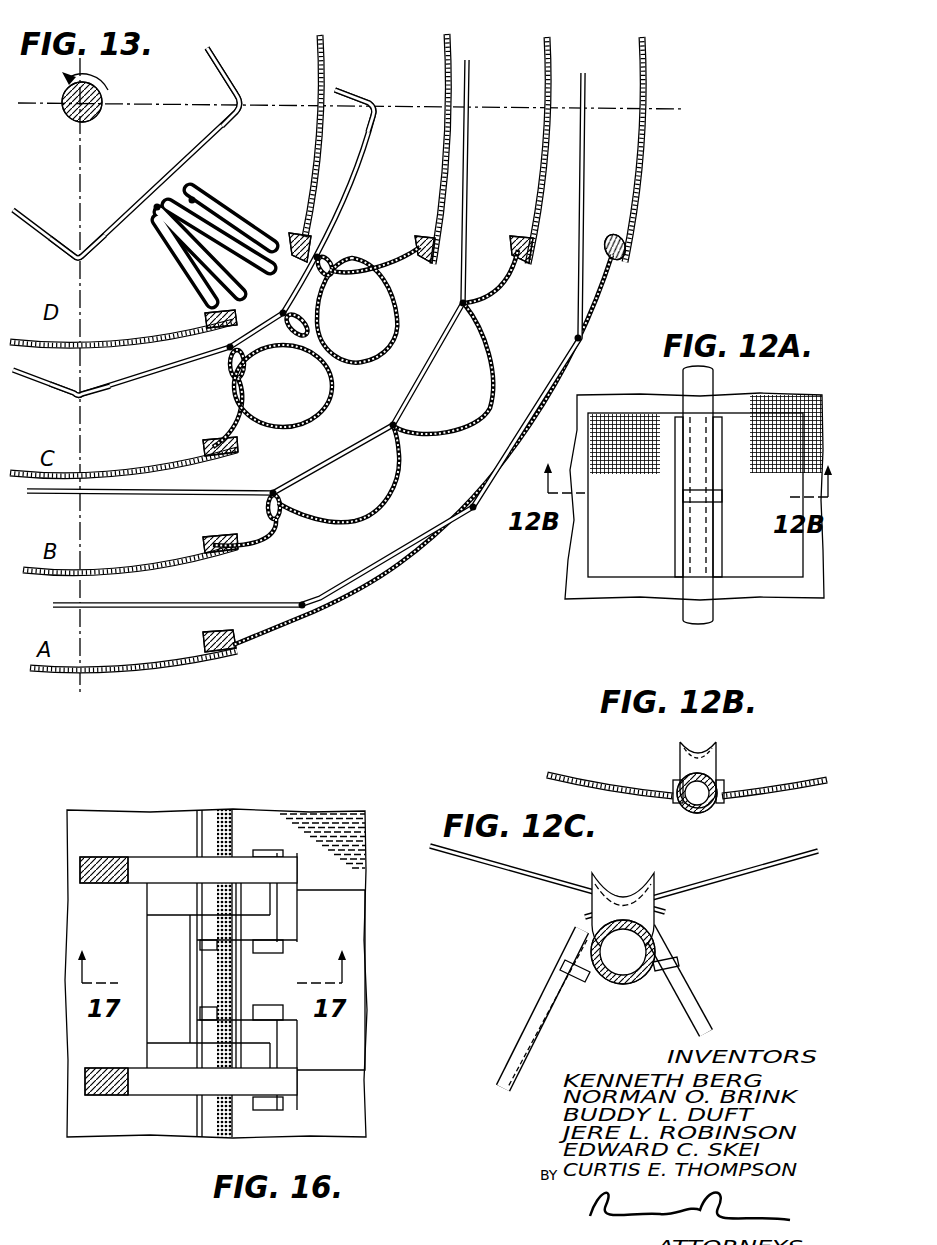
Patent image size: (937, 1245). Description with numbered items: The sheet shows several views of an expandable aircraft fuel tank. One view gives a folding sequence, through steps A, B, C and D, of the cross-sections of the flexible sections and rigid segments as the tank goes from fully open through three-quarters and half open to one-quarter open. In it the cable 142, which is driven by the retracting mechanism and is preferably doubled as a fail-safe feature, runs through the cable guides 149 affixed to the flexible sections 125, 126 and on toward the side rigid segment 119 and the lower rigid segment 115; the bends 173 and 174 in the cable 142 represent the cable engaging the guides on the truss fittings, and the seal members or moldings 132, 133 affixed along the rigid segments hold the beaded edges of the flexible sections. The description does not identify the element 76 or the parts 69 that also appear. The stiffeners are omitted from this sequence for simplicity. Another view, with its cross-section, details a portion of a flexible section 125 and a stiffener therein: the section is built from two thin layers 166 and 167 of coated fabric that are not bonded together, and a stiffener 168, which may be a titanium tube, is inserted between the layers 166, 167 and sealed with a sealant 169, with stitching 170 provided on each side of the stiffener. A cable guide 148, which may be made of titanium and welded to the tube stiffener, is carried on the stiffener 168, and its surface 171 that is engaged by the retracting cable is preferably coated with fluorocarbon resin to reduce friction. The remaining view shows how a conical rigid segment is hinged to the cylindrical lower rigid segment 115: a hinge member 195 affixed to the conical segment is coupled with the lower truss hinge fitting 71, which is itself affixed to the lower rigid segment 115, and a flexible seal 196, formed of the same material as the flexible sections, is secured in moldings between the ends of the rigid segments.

In FIG. 13, the pivot shaft 76 is at (68, 122).
In FIG. 13, the bend in cable 173 is at (233, 100).
In FIG. 13, the cable guide 149 is at (173, 200).
In FIG. 13, the side rigid segment 119 is at (317, 148).
In FIG. 13, the flexible section 126 is at (233, 207).
In FIG. 13, the bend in cable 174 is at (82, 257).
In FIG. 13, the cable 142 is at (110, 247).
In FIG. 12C, the cable 142 is at (772, 865).
In FIG. 13, the lower rigid segment 115 is at (107, 340).
In FIG. 16, the lower rigid segment 115 is at (313, 822).
In FIG. 13, the seal member 132 is at (620, 267).
In FIG. 13, the seal member 133 is at (233, 640).
In FIG. 12A, the flexible section 125 is at (662, 498).
In FIG. 12C, the flexible section 125 is at (624, 967).
In FIG. 12A, the layer 166 is at (622, 423).
In FIG. 12B, the layer 166 is at (610, 780).
In FIG. 12C, the layer 166 is at (545, 1017).
In FIG. 12A, the layer 167 is at (597, 590).
In FIG. 12B, the layer 167 is at (763, 795).
In FIG. 12C, the layer 167 is at (563, 1023).
In FIG. 12A, the stiffener 168 is at (695, 603).
In FIG. 12B, the stiffener 168 is at (695, 813).
In FIG. 12C, the stiffener 168 is at (631, 985).
In FIG. 12B, the sealant 169 is at (683, 813).
In FIG. 12C, the sealant 169 is at (658, 950).
In FIG. 12A, the stitching 170 is at (705, 487).
In FIG. 12B, the stitching 170 is at (677, 787).
In FIG. 12C, the stitching 170 is at (577, 970).
In FIG. 12B, the surface of cable guide 171 is at (718, 752).
In FIG. 12A, the cable guide 148 is at (700, 502).
In FIG. 12B, the cable guide 148 is at (697, 752).
In FIG. 12C, the cable guide 148 is at (655, 880).
In FIG. 16, the bolt 69 is at (122, 857).
In FIG. 16, the lower truss hinge fitting 71 is at (240, 1030).
In FIG. 16, the hinge member 195 is at (163, 895).
In FIG. 16, the flexible seal 196 is at (205, 1112).